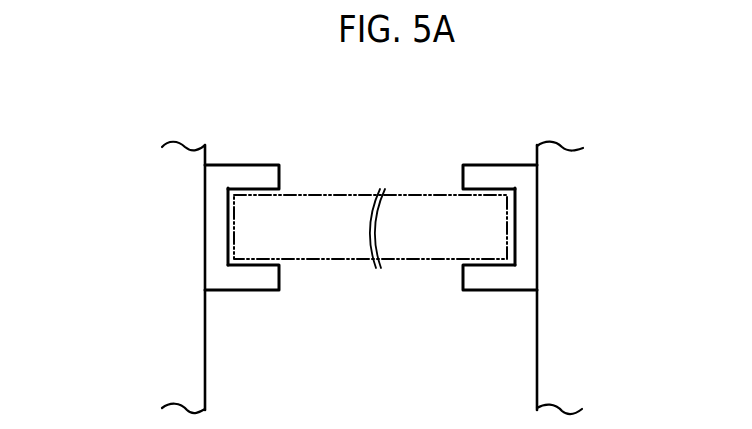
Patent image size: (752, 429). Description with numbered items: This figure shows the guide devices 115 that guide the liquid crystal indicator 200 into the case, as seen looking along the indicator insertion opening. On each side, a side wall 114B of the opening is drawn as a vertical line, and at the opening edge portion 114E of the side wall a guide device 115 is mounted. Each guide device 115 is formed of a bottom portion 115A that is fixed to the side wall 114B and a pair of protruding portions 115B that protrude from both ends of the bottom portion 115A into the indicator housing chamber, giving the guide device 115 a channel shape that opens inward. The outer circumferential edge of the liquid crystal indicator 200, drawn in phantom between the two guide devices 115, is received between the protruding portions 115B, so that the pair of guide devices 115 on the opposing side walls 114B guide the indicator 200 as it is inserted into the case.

The liquid crystal indicator 200 is at (344, 202).
The guide device 115 is at (84, 155).
The bottom portion 115A is at (222, 226).
The protruding portion 115B is at (261, 174).
The side wall 114B is at (205, 353).
The opening edge portion 114E is at (227, 311).